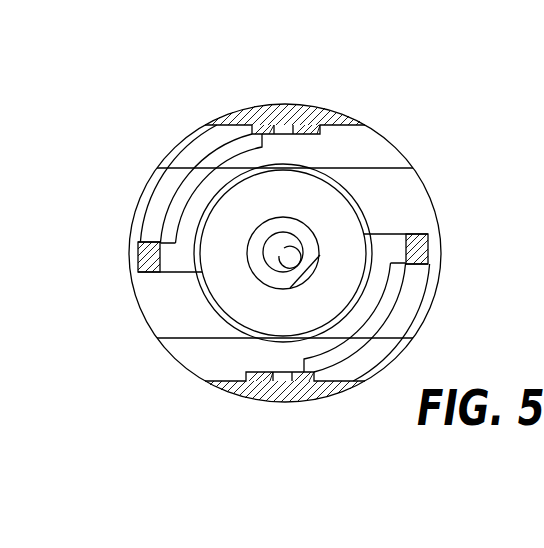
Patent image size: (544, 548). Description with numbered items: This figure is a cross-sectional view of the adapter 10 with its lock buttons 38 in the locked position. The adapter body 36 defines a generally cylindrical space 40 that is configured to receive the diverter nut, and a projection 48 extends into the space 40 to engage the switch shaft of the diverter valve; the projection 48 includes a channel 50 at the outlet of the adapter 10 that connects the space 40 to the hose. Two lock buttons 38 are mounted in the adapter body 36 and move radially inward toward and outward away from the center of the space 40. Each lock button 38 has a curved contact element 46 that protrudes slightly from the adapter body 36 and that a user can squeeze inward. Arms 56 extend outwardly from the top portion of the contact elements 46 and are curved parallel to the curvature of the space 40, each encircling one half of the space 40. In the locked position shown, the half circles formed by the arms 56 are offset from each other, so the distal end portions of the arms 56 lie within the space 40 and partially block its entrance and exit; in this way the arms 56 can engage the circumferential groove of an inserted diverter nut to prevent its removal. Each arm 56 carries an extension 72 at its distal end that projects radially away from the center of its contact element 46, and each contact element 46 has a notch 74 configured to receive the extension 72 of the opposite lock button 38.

The adapter 10 is at (216, 70).
The adapter body 36 is at (322, 113).
The lock buttons 38 is at (128, 231).
The space 40 is at (327, 195).
The contact elements 46 is at (143, 283).
The projection 48 is at (270, 268).
The channel 50 is at (283, 249).
The arms 56 is at (194, 173).
The extension 72 is at (160, 240).
The notch 74 is at (143, 260).